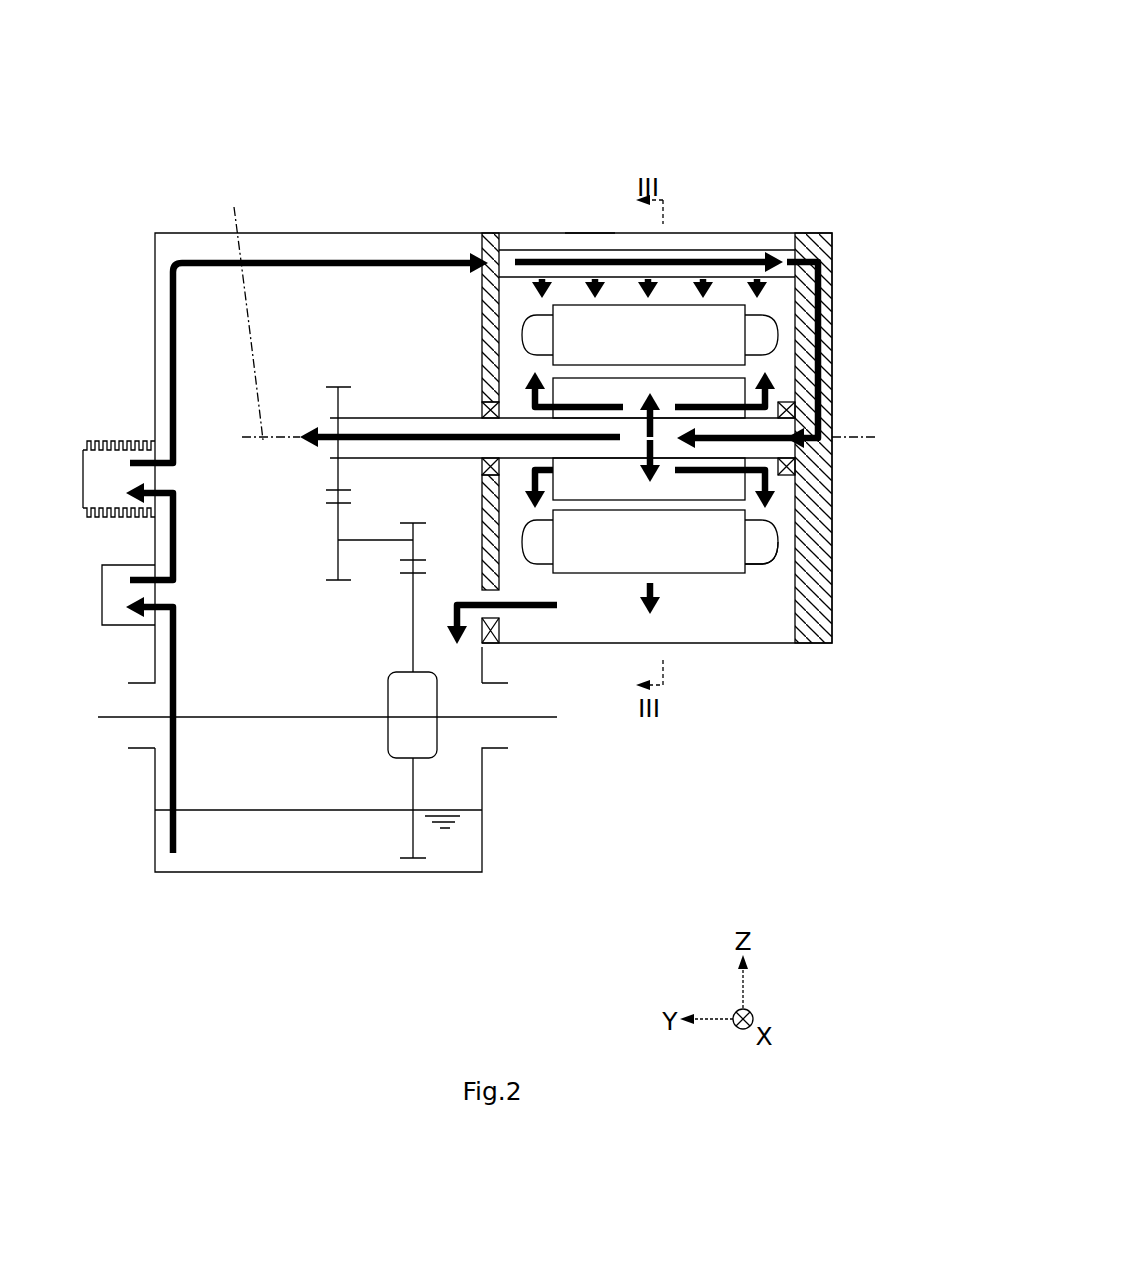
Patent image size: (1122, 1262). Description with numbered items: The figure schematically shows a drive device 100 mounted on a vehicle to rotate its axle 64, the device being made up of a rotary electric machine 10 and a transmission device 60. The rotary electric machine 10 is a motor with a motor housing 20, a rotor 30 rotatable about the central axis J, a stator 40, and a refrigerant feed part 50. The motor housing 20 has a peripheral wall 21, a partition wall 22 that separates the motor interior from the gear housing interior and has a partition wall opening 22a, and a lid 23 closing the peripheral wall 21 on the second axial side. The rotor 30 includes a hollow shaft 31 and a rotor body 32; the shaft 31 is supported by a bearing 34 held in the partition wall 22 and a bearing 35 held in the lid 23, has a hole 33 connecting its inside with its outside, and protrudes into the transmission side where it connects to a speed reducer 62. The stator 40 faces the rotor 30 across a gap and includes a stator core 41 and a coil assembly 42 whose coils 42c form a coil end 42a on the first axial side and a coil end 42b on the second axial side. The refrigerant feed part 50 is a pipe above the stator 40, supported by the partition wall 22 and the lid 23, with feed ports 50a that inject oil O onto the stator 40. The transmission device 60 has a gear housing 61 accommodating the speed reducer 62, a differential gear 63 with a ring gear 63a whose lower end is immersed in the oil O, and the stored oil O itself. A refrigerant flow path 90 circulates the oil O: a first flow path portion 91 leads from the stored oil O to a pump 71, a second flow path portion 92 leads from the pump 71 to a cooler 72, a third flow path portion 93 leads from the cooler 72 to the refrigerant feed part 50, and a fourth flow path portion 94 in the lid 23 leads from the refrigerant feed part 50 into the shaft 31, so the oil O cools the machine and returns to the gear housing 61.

The drive device 100 is at (687, 82).
The rotary electric machine 10 is at (766, 212).
The motor housing 20 is at (618, 226).
The peripheral wall 21 is at (560, 232).
The partition wall 22 is at (480, 318).
The partition wall opening 22a is at (502, 607).
The lid 23 is at (812, 540).
The rotor 30 is at (394, 404).
The shaft 31 is at (430, 417).
The rotor body 32 is at (705, 491).
The hole 33 is at (661, 449).
The bearing 34 is at (499, 406).
The bearing 35 is at (797, 410).
The stator 40 is at (756, 582).
The stator core 41 is at (699, 580).
The coil assembly 42 is at (775, 302).
The coil end 42a is at (536, 563).
The coil end 42b is at (770, 557).
The coil 42c is at (773, 330).
The refrigerant feed part 50 is at (700, 236).
The feed port 50a is at (607, 238).
The transmission device 60 is at (182, 208).
The gear housing 61 is at (302, 232).
The speed reducer 62 is at (320, 517).
The differential gear 63 is at (379, 752).
The ring gear 63a is at (414, 787).
The axle 64 is at (109, 719).
The pump 71 is at (111, 620).
The cooler 72 is at (109, 440).
The refrigerant flow path 90 is at (184, 852).
The first flow path portion 91 is at (170, 830).
The second flow path portion 92 is at (170, 539).
The third flow path portion 93 is at (172, 326).
The fourth flow path portion 94 is at (832, 343).
The central axis J is at (553, 308).
The oil O is at (390, 848).